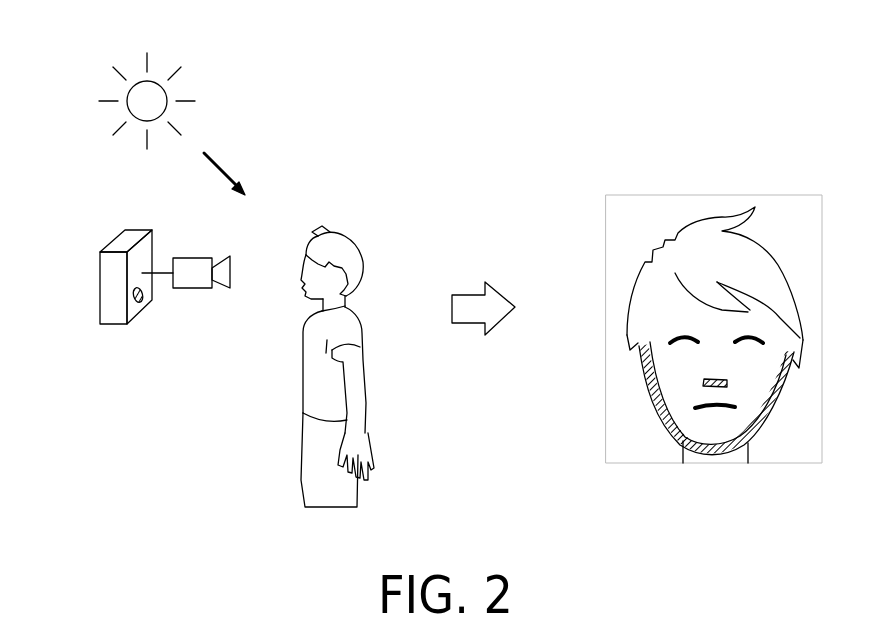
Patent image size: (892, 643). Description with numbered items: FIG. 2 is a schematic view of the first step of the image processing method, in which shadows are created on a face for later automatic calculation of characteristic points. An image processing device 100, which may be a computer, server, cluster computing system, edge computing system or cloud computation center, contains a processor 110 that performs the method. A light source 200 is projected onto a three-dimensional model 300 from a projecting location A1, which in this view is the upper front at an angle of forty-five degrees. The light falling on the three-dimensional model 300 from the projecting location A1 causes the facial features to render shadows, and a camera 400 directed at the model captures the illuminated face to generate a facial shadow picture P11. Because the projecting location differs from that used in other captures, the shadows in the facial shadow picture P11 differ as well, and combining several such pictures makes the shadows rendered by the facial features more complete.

The light source 200 is at (152, 90).
The projecting location A1 is at (225, 163).
The image processing device 100 is at (135, 231).
The processor 110 is at (133, 291).
The camera 400 is at (218, 290).
The 3D model 300 is at (338, 248).
The facial shadow picture P11 is at (655, 222).